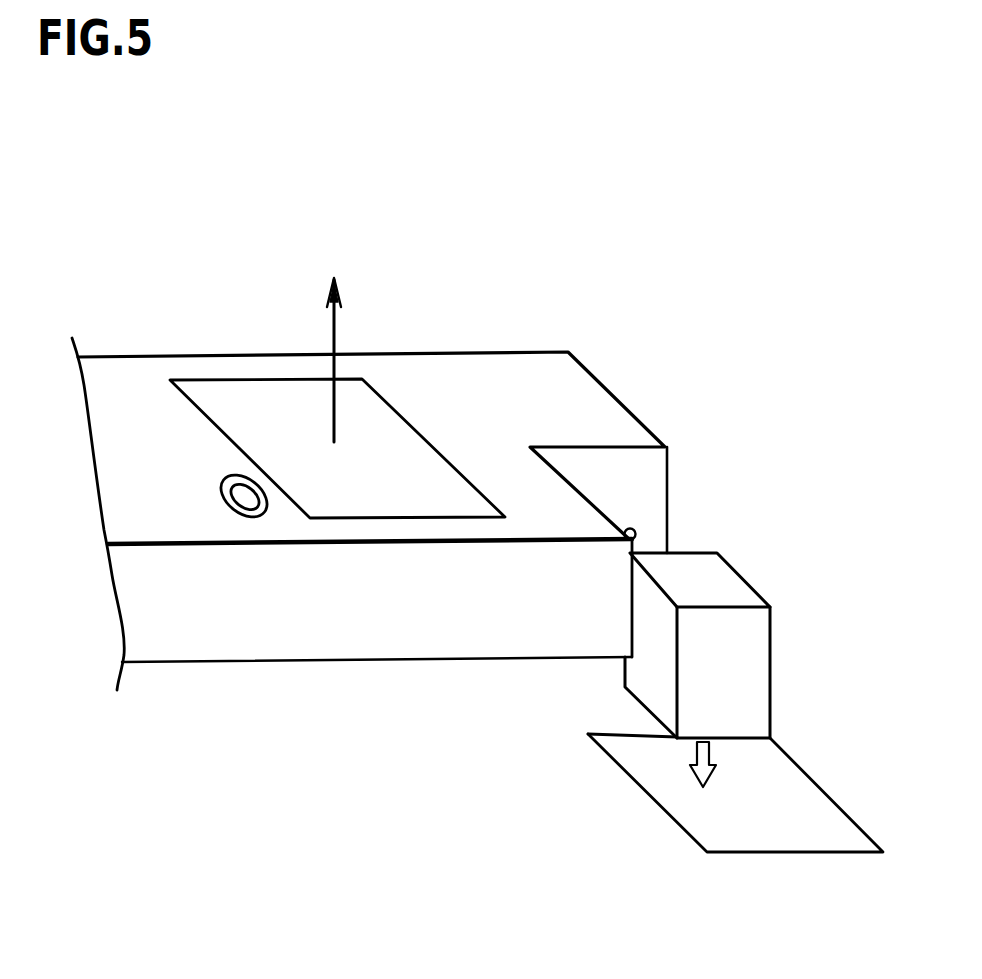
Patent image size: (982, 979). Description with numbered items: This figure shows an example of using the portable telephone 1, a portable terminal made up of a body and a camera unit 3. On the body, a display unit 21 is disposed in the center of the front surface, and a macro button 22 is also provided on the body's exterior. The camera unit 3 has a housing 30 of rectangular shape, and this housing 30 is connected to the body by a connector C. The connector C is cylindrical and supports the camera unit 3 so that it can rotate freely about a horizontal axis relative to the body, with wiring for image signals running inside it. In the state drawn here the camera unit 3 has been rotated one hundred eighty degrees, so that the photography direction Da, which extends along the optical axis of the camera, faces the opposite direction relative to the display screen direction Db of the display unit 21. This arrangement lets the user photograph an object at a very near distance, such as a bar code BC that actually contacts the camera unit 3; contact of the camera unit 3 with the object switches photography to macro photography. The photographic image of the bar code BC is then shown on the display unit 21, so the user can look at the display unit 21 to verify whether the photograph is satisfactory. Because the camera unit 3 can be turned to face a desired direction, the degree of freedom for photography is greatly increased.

The portable telephone 1 is at (149, 283).
The display unit 21 is at (273, 380).
The macro button 22 is at (262, 516).
The camera unit 3 is at (707, 550).
The housing 30 is at (762, 587).
The connector C is at (636, 528).
The photography direction Da is at (695, 753).
The display screen direction Db is at (334, 322).
The bar code BC is at (783, 842).